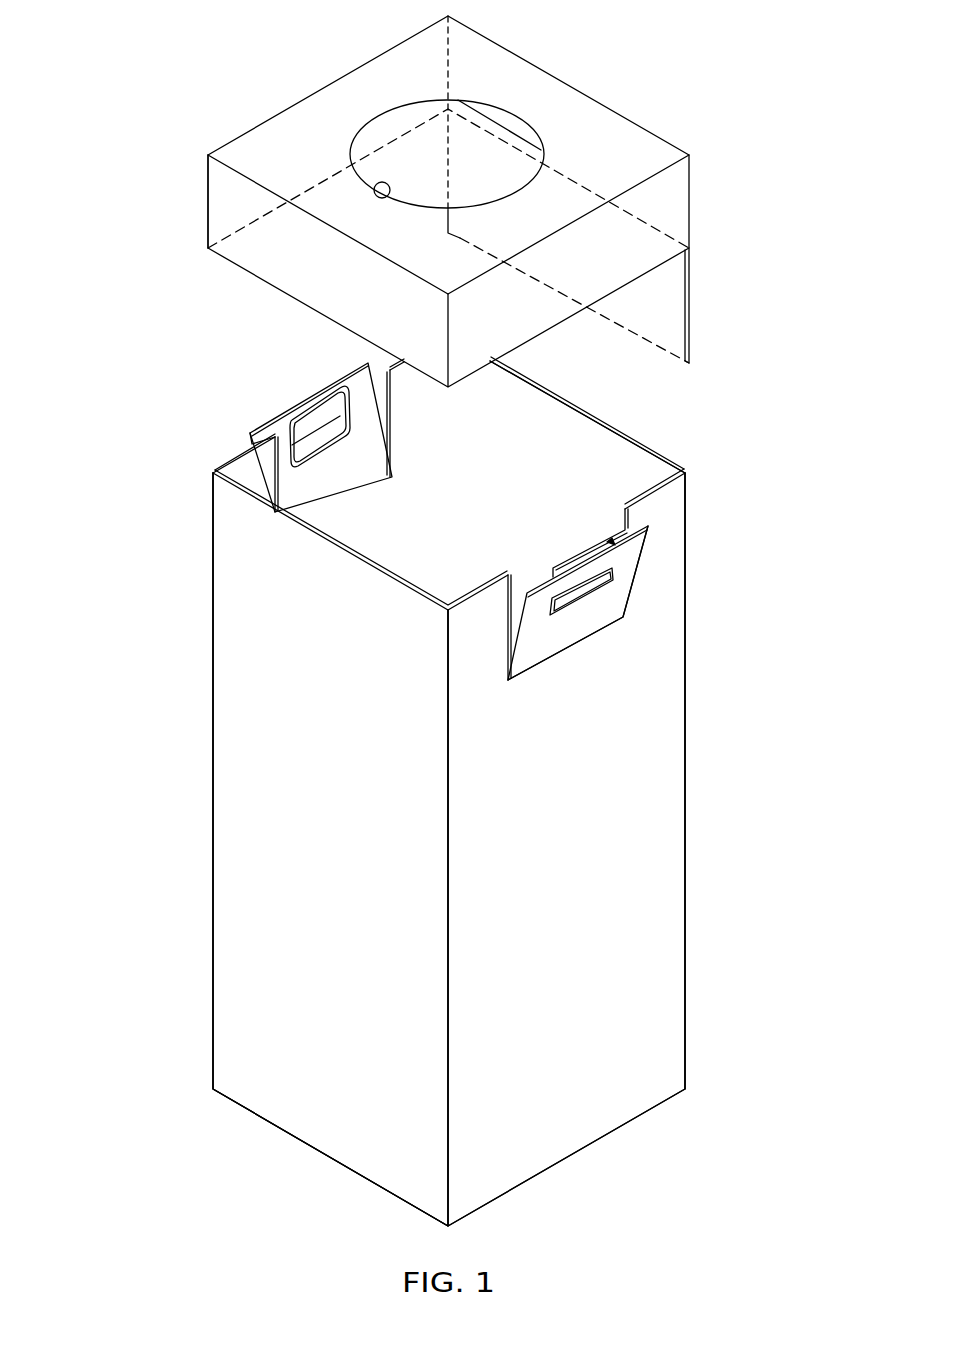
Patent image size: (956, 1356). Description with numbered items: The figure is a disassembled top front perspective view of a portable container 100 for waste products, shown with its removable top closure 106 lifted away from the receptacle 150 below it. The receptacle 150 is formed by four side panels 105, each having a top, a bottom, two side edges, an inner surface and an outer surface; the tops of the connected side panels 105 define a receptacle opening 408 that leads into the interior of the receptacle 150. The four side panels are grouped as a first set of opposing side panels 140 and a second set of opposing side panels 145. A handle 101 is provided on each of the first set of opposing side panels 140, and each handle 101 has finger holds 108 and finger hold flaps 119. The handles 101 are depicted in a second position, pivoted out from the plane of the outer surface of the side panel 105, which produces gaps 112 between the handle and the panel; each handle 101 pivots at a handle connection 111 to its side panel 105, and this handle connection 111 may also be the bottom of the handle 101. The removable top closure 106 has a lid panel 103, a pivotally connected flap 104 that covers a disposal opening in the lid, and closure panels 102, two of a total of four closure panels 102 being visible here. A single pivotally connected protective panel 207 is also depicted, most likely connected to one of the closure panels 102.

The portable container 100 is at (185, 733).
The handle 101 is at (262, 430).
The closure panel 102 is at (672, 188).
The lid panel 103 is at (612, 130).
The pivotally connected flap 104 is at (398, 122).
The side panel 105 is at (214, 462).
The removable top closure 106 is at (205, 200).
The finger hold 108 is at (340, 398).
The handle connection 111 is at (576, 645).
The gap 112 is at (512, 607).
The finger hold flap 119 is at (630, 520).
The first set of opposing side panels 140 is at (473, 588).
The second set of opposing side panels 145 is at (340, 546).
The receptacle 150 is at (210, 633).
The protective panel 207 is at (681, 302).
The receptacle opening 408 is at (573, 465).